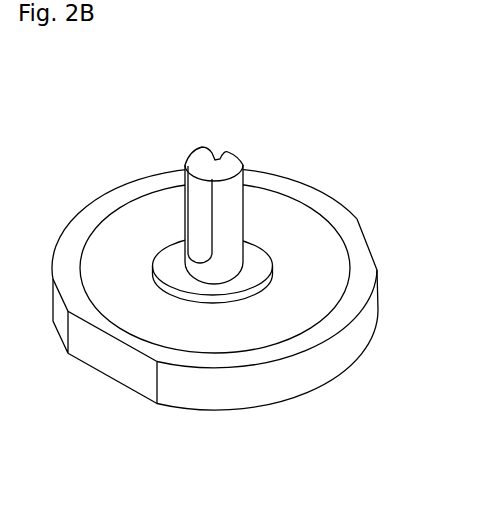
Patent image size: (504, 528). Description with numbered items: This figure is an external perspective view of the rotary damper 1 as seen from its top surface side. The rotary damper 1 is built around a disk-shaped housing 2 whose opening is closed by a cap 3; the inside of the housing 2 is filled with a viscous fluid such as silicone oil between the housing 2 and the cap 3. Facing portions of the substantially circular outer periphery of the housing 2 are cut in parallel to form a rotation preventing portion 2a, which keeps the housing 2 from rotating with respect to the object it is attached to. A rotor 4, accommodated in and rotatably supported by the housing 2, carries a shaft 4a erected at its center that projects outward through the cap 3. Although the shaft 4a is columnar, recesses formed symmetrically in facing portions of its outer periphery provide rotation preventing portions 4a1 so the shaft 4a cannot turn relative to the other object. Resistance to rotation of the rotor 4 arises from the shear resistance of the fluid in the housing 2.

The rotary damper 1 is at (336, 81).
The housing 2 is at (92, 189).
The rotation preventing portion 2a is at (337, 210).
The cap 3 is at (323, 270).
The rotor 4 is at (197, 133).
The shaft 4a is at (243, 210).
The rotation preventing portion 4a1 is at (184, 212).